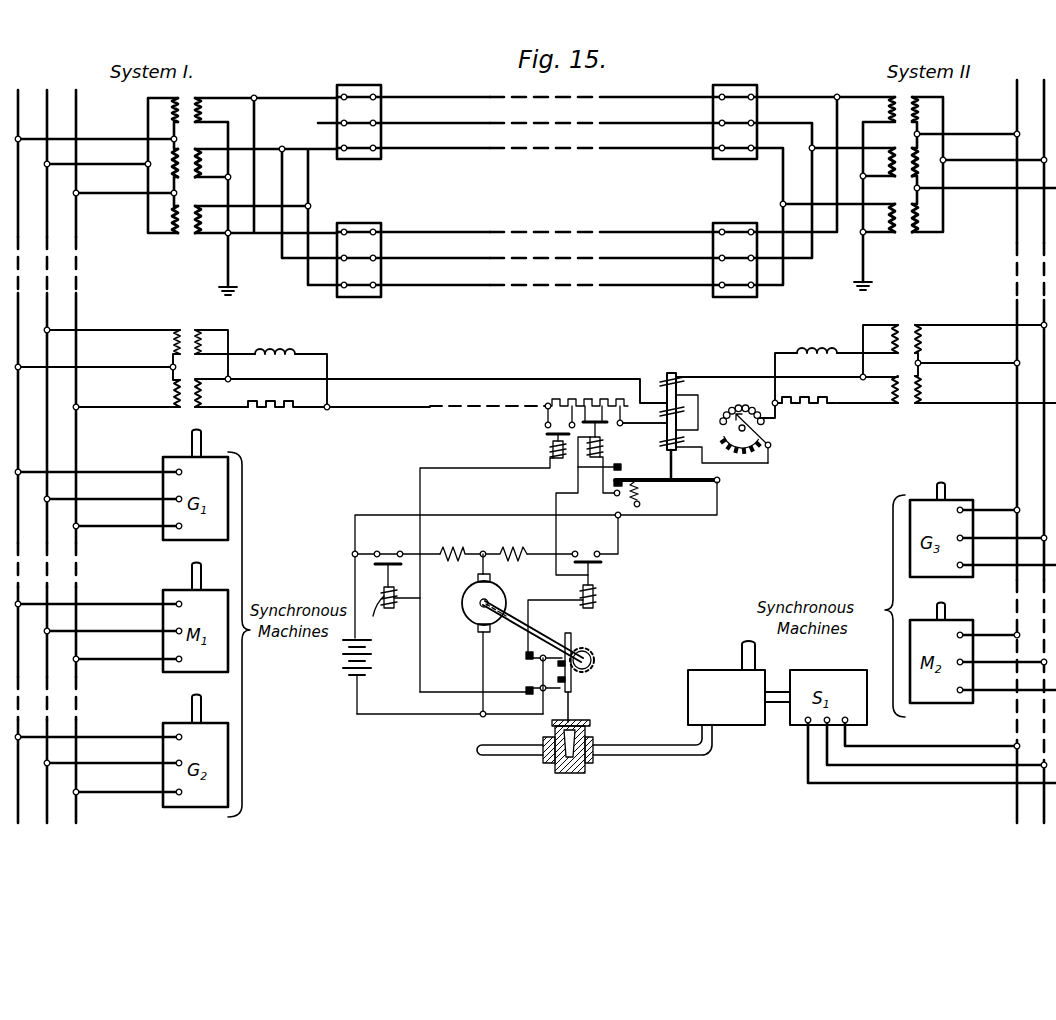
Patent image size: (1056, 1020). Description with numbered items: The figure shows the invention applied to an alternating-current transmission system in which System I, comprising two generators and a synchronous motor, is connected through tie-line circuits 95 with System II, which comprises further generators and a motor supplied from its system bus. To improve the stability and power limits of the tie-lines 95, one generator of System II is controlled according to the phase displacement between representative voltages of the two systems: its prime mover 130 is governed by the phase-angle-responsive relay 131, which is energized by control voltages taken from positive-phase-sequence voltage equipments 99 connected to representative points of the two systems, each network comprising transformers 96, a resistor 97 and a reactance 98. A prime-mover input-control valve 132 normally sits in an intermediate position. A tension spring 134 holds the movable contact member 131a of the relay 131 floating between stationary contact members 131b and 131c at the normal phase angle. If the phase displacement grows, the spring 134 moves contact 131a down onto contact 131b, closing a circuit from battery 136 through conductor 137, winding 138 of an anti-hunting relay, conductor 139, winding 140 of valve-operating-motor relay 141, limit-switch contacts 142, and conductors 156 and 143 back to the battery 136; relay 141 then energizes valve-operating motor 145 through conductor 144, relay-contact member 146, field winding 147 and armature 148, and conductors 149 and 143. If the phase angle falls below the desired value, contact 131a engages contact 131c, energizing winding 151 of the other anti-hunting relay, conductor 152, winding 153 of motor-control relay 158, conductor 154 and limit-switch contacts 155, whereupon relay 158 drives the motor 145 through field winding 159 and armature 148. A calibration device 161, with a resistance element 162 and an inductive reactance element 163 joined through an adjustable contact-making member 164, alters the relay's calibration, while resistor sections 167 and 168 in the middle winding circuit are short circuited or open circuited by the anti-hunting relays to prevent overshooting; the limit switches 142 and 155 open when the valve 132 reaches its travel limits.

The tie-line circuits 95 is at (545, 178).
The transformers 96 is at (211, 382).
The resistor 97 is at (280, 412).
The reactance 98 is at (285, 350).
The positive-phase-sequence voltage equipment 99 is at (276, 329).
The prime mover 130 is at (718, 670).
The phase-angle-responsive relay 131 is at (684, 366).
The movable contact member 131a is at (622, 481).
The stationary contact member 131b is at (614, 495).
The stationary contact member 131c is at (619, 459).
The prime-mover input-control valve 132 is at (580, 801).
The tension spring 134 is at (641, 501).
The battery 136 is at (331, 674).
The conductor 137 is at (718, 497).
The winding of anti-hunting relay 138 is at (605, 448).
The conductor 139 is at (556, 497).
The winding of valve-operating-motor relay 140 is at (597, 593).
The valve-operating-motor relay 141 is at (628, 619).
The limit-switch contacts 142 is at (526, 657).
The conductor 143 is at (443, 715).
The conductor 144 is at (620, 533).
The valve-operating motor 145 is at (538, 589).
The relay-contact member 146 is at (601, 566).
The field winding 147 is at (523, 535).
The armature 148 is at (462, 596).
The conductor 149 is at (483, 675).
The winding of anti-hunting relay 151 is at (553, 452).
The conductor 152 is at (420, 477).
The winding of motor-control relay 153 is at (396, 598).
The conductor 154 is at (420, 681).
The limit-switch contacts 155 is at (534, 694).
The conductor 156 is at (527, 713).
The motor-control relay 158 is at (404, 546).
The field winding 159 is at (458, 535).
The calibration device 161 is at (784, 439).
The resistance element 162 is at (727, 440).
The inductive reactance element 163 is at (751, 408).
The adjustable contact-making member 164 is at (737, 422).
The resistor section 167 is at (561, 401).
The resistor section 168 is at (606, 400).